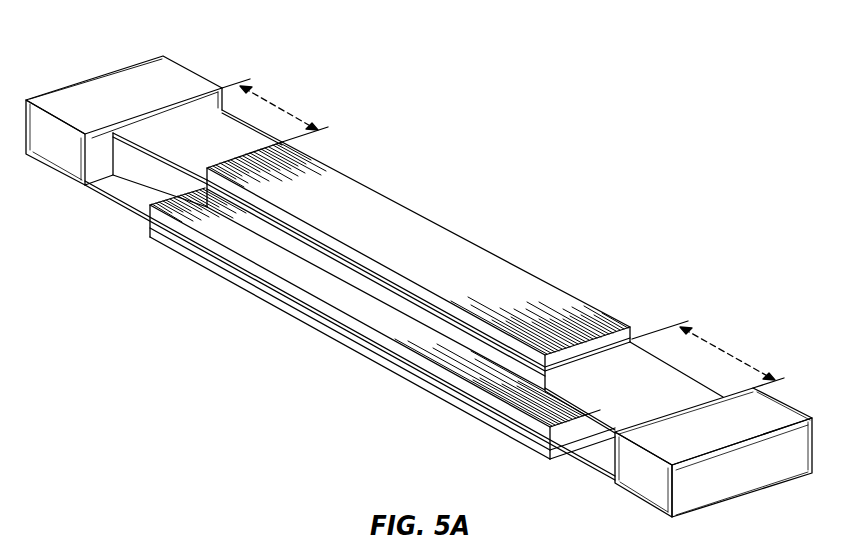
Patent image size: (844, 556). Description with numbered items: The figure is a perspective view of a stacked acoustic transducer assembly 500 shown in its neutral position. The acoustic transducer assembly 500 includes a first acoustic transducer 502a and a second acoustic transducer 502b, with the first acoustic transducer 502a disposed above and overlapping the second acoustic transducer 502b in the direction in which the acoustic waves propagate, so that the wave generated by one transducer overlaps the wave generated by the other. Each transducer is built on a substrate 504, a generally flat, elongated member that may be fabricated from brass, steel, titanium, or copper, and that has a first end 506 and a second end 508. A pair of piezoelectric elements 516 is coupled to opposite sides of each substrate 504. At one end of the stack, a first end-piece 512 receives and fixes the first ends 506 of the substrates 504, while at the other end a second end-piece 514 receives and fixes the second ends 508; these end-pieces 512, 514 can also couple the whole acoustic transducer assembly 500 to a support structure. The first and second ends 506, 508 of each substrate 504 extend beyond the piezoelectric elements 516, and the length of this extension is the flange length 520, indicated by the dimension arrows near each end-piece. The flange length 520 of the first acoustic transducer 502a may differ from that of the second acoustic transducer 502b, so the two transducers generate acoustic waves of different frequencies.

The acoustic transducer assembly 500 is at (723, 97).
The first acoustic transducer 502a is at (534, 272).
The second acoustic transducer 502b is at (440, 401).
The substrate 504 is at (140, 128).
The first end 506 is at (153, 110).
The second end 508 is at (608, 482).
The first end-piece 512 is at (73, 97).
The second end-piece 514 is at (783, 467).
The piezoelectric elements 516 is at (390, 300).
The flange length 520 is at (290, 112).